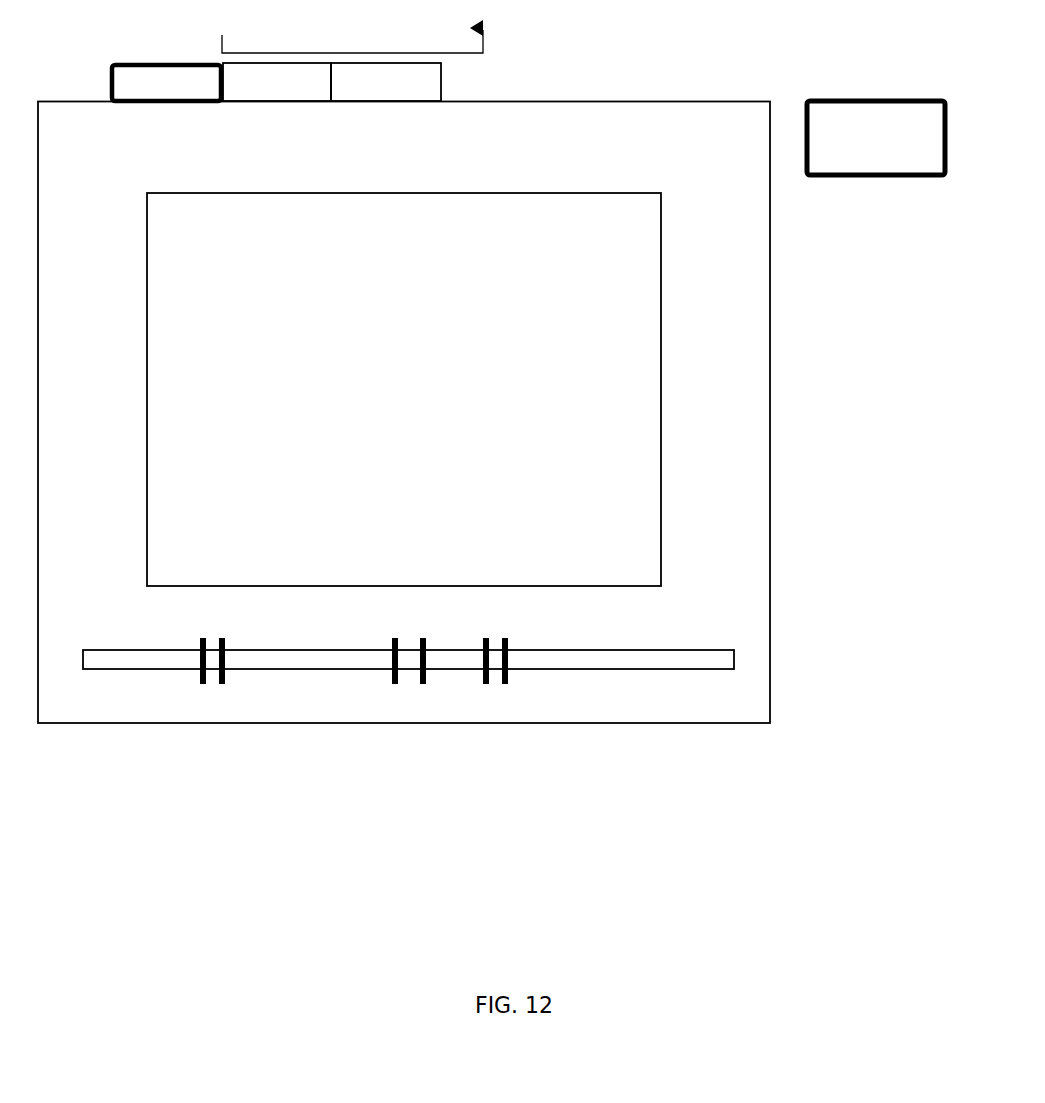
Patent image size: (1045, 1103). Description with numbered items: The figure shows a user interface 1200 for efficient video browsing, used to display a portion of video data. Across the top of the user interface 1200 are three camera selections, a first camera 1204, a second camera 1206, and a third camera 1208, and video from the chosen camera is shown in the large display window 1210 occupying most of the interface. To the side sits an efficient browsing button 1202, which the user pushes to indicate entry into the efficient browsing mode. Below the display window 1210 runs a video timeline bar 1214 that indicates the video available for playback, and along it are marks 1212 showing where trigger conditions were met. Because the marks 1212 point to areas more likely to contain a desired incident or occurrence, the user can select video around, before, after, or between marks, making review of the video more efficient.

The user interface 1200 is at (705, 113).
The efficient browsing button 1202 is at (927, 113).
The cam 1 1204 is at (108, 80).
The cam 2 1206 is at (278, 67).
The cam 3 1208 is at (422, 66).
The display window 1210 is at (348, 213).
The marks 1212 is at (487, 695).
The video timeline bar 1214 is at (713, 653).